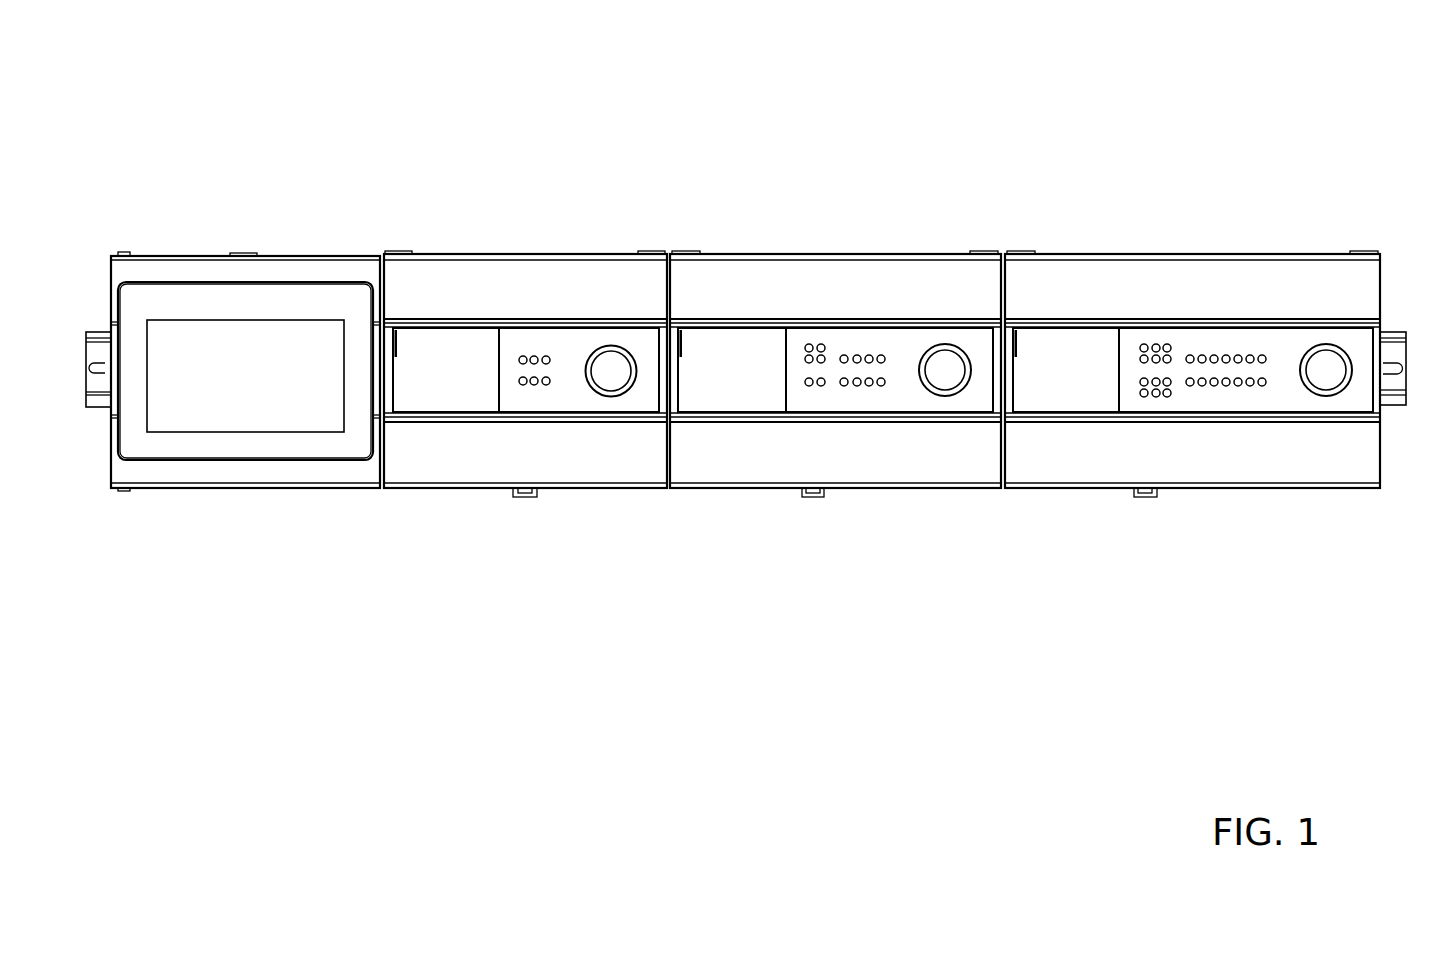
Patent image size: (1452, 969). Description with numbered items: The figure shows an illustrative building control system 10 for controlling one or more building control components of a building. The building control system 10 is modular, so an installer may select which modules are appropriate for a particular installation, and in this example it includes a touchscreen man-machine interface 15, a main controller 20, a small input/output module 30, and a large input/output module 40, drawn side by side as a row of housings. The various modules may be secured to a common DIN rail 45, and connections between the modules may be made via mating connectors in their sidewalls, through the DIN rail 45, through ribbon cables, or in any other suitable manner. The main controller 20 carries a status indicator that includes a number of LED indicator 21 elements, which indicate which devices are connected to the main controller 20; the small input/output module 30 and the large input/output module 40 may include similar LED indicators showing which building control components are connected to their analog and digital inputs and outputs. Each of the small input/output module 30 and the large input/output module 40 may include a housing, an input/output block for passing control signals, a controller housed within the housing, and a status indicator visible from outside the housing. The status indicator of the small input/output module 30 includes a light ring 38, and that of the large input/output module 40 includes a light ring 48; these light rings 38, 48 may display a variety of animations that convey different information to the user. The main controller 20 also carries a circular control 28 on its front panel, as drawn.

The building control system 10 is at (1166, 104).
The touchscreen man-machine interface 15 is at (282, 255).
The main controller 20 is at (467, 255).
The LED indicator 21 is at (534, 352).
The push button of first module 28 is at (611, 396).
The small input/output module 30 is at (847, 255).
The light ring 38 is at (945, 395).
The large input/output module 40 is at (1192, 255).
The DIN rail 45 is at (1400, 406).
The light ring 48 is at (1326, 395).